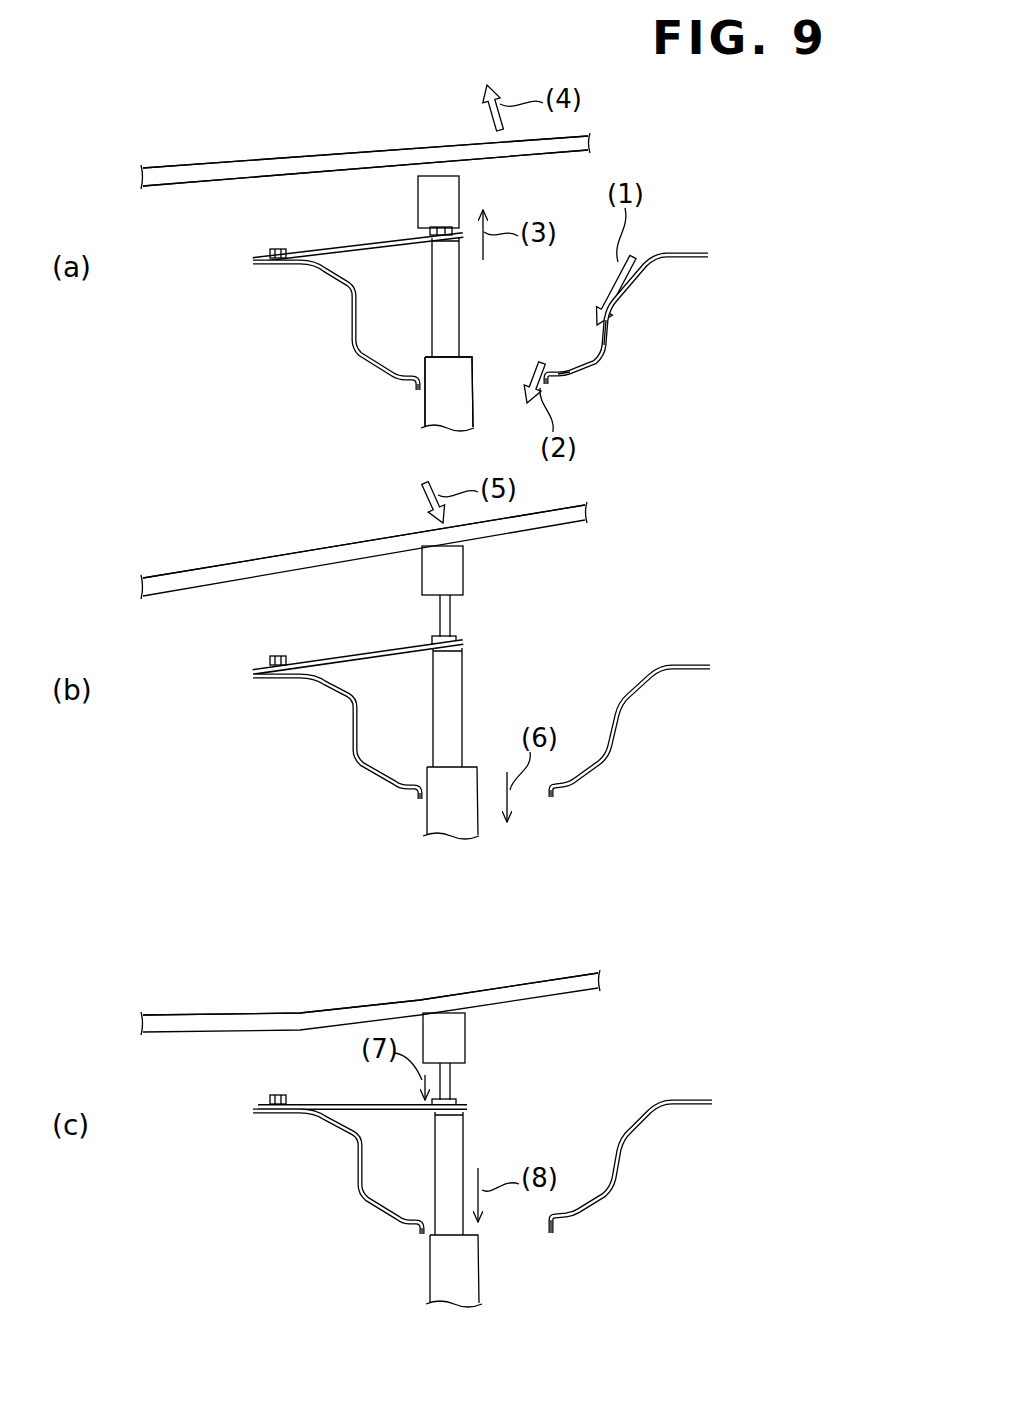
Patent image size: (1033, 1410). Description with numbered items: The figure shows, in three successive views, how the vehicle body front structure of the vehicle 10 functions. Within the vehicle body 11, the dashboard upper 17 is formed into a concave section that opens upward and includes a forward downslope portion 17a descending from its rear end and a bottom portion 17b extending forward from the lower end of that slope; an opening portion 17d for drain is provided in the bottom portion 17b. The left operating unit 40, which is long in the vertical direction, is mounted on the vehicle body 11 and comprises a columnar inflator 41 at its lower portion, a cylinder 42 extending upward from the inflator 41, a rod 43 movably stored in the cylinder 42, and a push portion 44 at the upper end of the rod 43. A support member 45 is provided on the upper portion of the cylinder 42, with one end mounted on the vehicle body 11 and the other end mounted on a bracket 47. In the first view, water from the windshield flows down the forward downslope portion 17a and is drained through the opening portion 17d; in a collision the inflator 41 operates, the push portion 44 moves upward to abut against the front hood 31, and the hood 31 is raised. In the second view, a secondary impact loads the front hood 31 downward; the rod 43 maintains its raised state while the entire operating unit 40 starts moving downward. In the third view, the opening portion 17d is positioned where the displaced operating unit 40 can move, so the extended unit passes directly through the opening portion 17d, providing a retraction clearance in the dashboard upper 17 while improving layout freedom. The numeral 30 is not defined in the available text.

The vehicle 10 is at (243, 130).
The vehicle body 11 is at (250, 258).
The dashboard upper 17 is at (680, 253).
The forward downslope portion 17a is at (606, 350).
The bottom portion 17b is at (562, 370).
The opening portion 17d is at (414, 388).
The roof assembly 30 is at (413, 134).
The front hood 31 is at (345, 153).
The operating unit 40 is at (425, 405).
The inflator 41 is at (455, 405).
The cylinder 42 is at (432, 310).
The rod 43 is at (452, 612).
The push portion 44 is at (440, 176).
The support member 45 is at (443, 243).
The bracket 47 is at (350, 243).